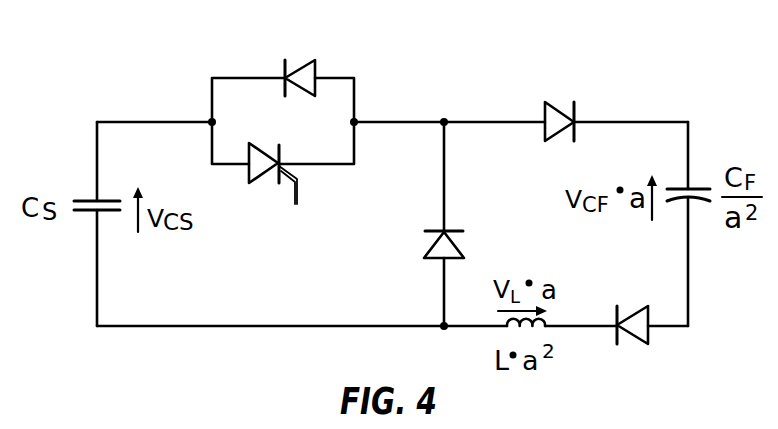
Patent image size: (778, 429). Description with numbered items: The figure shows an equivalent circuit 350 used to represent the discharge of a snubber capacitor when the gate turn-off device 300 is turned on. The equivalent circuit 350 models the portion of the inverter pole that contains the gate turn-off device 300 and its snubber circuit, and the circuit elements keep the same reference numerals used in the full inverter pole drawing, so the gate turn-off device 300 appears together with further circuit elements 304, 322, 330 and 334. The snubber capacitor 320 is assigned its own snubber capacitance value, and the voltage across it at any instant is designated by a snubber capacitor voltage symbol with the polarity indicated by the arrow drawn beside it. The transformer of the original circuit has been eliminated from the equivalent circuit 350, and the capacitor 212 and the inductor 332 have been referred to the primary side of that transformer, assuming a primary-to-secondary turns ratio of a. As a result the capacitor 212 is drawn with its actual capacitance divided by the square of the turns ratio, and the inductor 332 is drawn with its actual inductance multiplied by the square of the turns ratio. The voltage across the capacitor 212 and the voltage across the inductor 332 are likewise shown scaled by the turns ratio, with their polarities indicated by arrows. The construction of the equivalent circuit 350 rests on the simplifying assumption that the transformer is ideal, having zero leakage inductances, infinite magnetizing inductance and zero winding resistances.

The gate turn-off device 300 is at (263, 175).
The anti-parallel diode 304 is at (303, 60).
The capacitor 320 is at (84, 200).
The diode 322 is at (454, 245).
The diode 330 is at (558, 108).
The inductor 332 is at (507, 337).
The diode 334 is at (633, 340).
The capacitor 212 is at (697, 188).
The equivalent circuit 350 is at (633, 49).